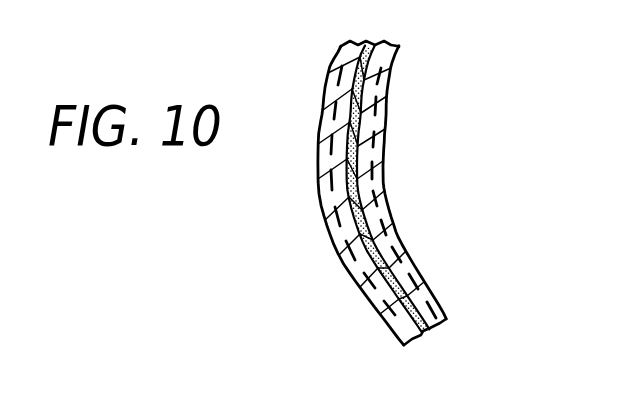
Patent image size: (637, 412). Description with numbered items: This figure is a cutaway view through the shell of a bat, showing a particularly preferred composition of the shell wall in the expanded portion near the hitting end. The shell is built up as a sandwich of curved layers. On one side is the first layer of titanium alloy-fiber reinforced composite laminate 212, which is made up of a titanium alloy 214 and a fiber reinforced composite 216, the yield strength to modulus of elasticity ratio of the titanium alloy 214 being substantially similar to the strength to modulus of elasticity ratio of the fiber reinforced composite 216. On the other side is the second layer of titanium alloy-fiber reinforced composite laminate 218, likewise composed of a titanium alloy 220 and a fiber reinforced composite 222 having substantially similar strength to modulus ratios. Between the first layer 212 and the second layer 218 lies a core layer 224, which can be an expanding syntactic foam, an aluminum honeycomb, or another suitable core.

The first layer of titanium alloy-fiber reinforced composite laminate 212 is at (389, 184).
The titanium alloy of the first layer 214 is at (330, 218).
The fiber reinforced composite of the first layer 216 is at (355, 270).
The second layer of titanium alloy-fiber reinforced composite laminate 218 is at (394, 91).
The titanium alloy in the second layer 220 is at (386, 221).
The fiber reinforced composite in the second layer 222 is at (431, 302).
The core layer 224 is at (349, 121).